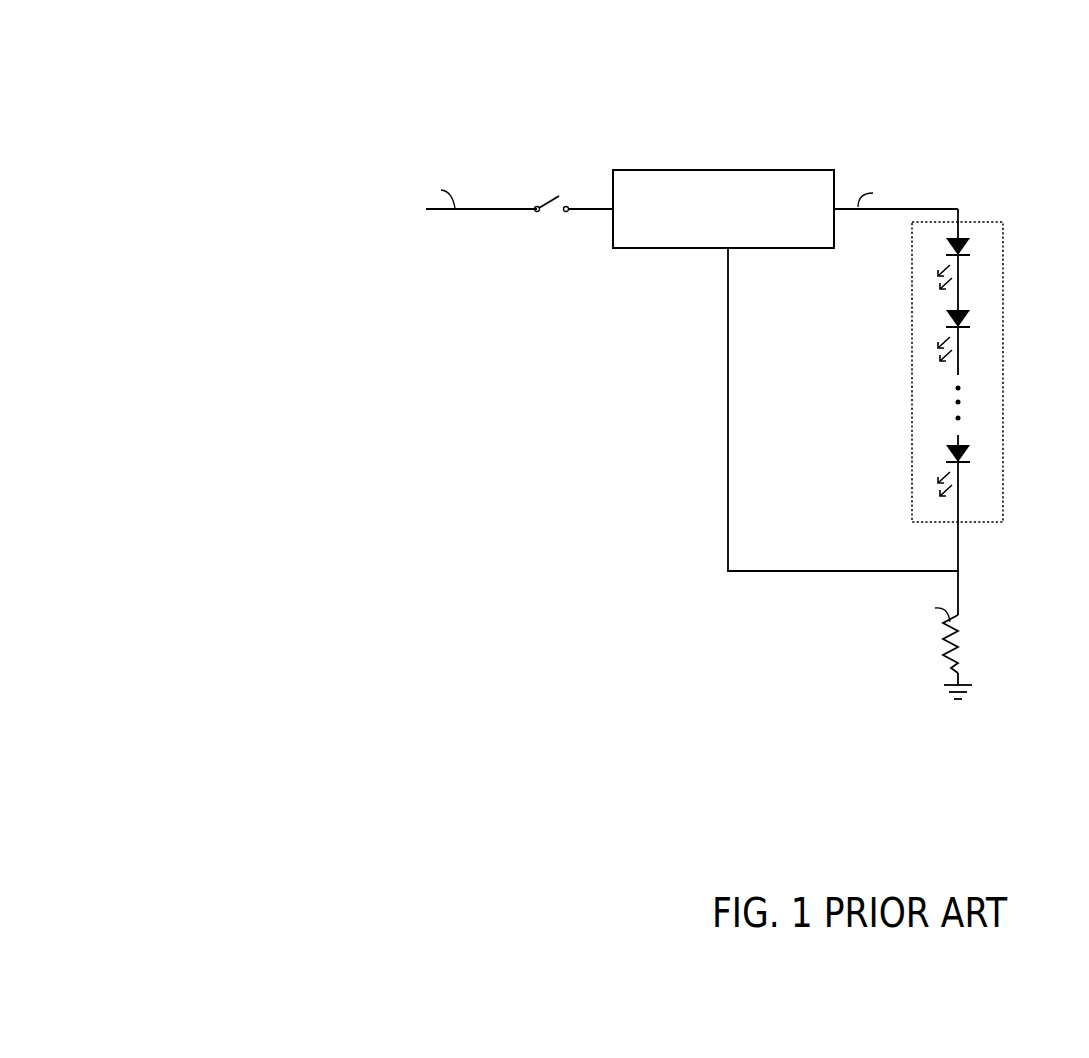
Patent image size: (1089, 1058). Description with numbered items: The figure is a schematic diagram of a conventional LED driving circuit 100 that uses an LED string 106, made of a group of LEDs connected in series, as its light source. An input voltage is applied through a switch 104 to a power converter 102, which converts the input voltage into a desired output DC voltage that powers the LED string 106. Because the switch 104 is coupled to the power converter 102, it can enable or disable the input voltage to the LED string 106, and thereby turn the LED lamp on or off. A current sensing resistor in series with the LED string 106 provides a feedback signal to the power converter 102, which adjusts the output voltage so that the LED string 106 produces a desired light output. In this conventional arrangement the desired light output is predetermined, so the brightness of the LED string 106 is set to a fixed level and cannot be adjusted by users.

The LED driving circuit 100 is at (326, 122).
The power converter 102 is at (767, 170).
The switch 104 is at (557, 200).
The LED string 106 is at (1003, 325).